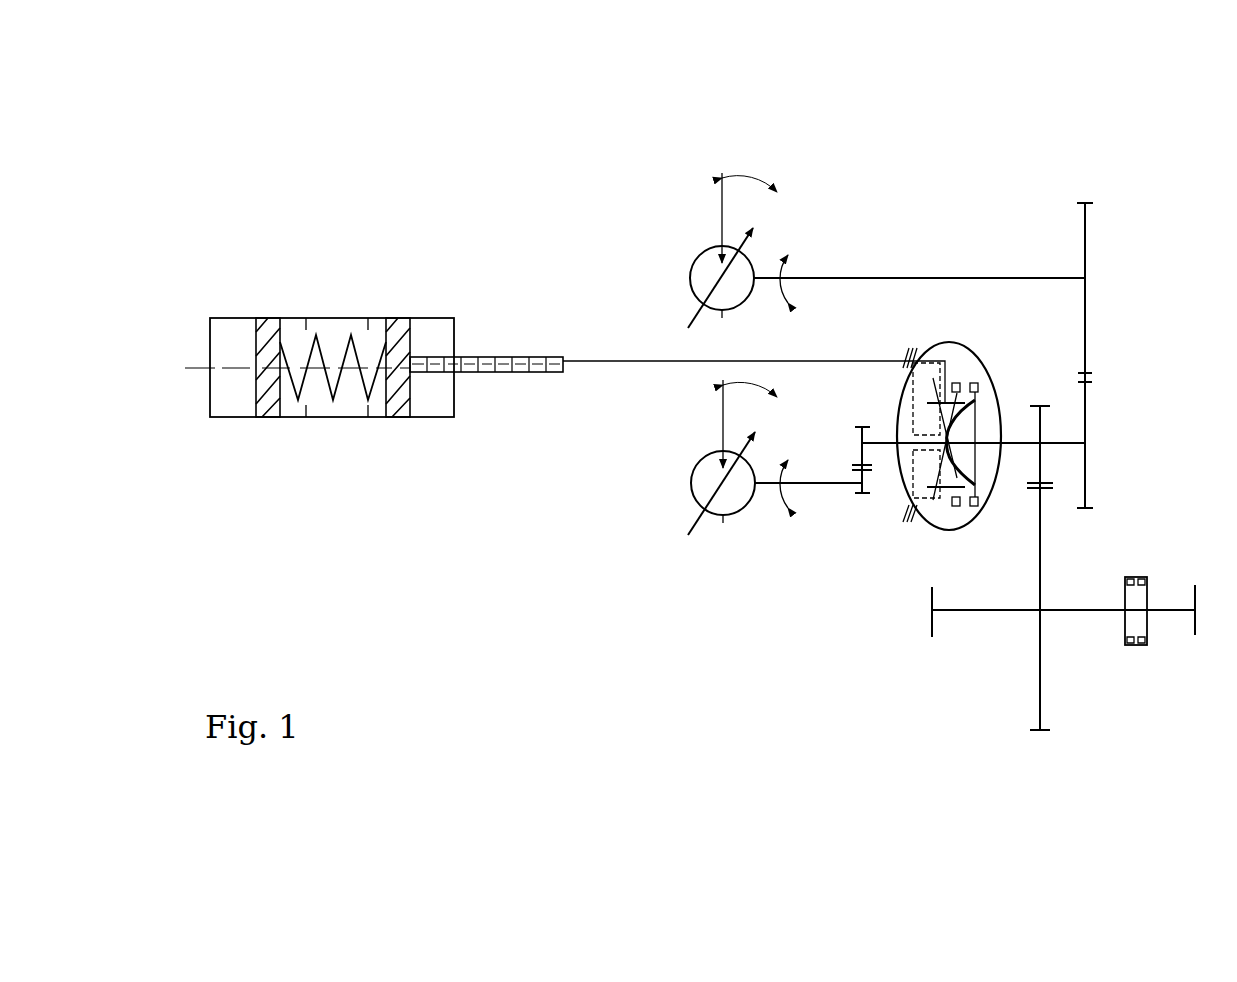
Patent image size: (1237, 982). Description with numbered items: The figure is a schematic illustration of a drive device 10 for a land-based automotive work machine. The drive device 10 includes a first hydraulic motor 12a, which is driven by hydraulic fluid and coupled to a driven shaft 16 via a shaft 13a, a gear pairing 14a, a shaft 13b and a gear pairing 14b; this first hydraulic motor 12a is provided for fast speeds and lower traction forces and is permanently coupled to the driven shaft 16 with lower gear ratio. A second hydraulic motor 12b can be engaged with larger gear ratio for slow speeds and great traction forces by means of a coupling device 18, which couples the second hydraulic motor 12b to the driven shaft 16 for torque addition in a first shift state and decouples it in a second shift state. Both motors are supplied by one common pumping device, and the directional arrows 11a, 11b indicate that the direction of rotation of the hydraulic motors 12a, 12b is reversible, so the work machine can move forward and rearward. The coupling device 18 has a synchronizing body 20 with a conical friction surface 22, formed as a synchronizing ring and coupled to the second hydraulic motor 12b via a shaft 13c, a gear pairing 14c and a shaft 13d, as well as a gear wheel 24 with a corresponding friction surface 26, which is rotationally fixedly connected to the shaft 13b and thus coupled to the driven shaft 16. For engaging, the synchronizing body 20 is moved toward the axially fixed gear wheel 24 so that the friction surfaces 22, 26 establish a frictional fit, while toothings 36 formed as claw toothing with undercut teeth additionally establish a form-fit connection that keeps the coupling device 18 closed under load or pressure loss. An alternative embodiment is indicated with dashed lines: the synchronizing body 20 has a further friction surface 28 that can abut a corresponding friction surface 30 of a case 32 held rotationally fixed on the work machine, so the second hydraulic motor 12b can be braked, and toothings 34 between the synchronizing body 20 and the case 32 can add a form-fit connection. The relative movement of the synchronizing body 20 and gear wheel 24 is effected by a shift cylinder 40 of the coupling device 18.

The drive device 10 is at (272, 113).
The shift cylinder 40 is at (352, 450).
The first hydraulic motor 12a is at (700, 258).
The second hydraulic motor 12b is at (693, 477).
The directional arrow 11a is at (797, 283).
The directional arrow 11b is at (790, 493).
The shaft 13a is at (968, 277).
The shaft 13b is at (1067, 440).
The shaft 13c is at (888, 443).
The shaft 13d is at (822, 483).
The gear pairing 14a is at (1085, 152).
The gear pairing 14b is at (1040, 755).
The gear pairing 14c is at (862, 420).
The driven shaft 16 is at (1080, 612).
The coupling device 18 is at (443, 458).
The synchronizing body 20 is at (943, 473).
The conical friction surface 22 is at (962, 417).
The gear wheel 24 is at (973, 427).
The friction surface 26 is at (947, 497).
The further friction surface 28 is at (897, 515).
The friction surface 30 is at (940, 385).
The case 32 is at (913, 505).
The toothings 34 is at (935, 470).
The toothings 36 is at (957, 387).